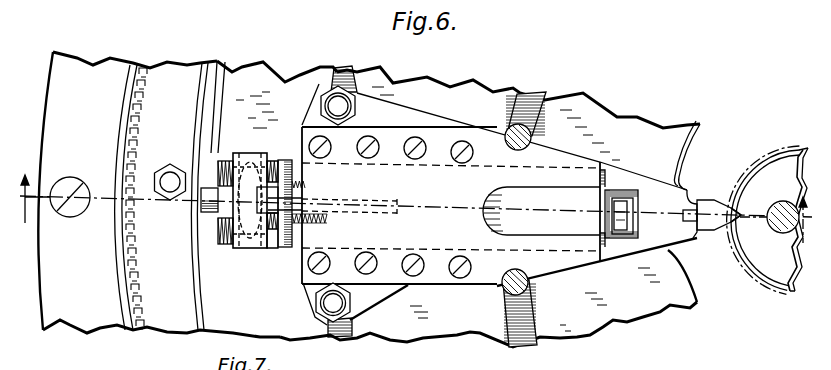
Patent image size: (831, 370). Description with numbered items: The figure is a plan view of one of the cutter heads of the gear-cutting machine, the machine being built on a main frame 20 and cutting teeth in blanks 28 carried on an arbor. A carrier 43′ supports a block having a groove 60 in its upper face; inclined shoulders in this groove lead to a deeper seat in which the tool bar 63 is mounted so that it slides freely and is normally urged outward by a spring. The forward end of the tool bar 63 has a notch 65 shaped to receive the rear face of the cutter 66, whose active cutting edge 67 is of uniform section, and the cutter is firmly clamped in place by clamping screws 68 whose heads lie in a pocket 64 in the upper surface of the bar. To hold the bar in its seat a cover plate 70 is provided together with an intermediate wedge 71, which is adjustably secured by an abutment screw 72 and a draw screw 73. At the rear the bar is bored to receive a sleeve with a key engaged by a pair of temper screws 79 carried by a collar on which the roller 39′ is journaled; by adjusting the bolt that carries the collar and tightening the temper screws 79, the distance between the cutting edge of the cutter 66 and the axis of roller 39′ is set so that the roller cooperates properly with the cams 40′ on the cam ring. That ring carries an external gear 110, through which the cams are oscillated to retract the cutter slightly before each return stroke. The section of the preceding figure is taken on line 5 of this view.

The section line 5— 5 is at (414, 209).
The main frame 20 is at (235, 265).
The blank 28 is at (778, 281).
The roller 39′ is at (248, 154).
The cams 40′ is at (228, 83).
The carrier 43′ is at (488, 312).
The groove 60 is at (439, 252).
The tool bar 63 is at (672, 253).
The pocket 64 is at (613, 190).
The notch 65 is at (687, 188).
The cutter 66 is at (702, 203).
The active cutting edge 67 is at (727, 219).
The clamping screws 68 is at (622, 226).
The cover plate 70 is at (397, 277).
The wedge 71 is at (273, 249).
The abutment screw 72 is at (296, 160).
The draw screw 73 is at (295, 250).
The temper screws 79 is at (220, 182).
The external gear 110 is at (137, 334).